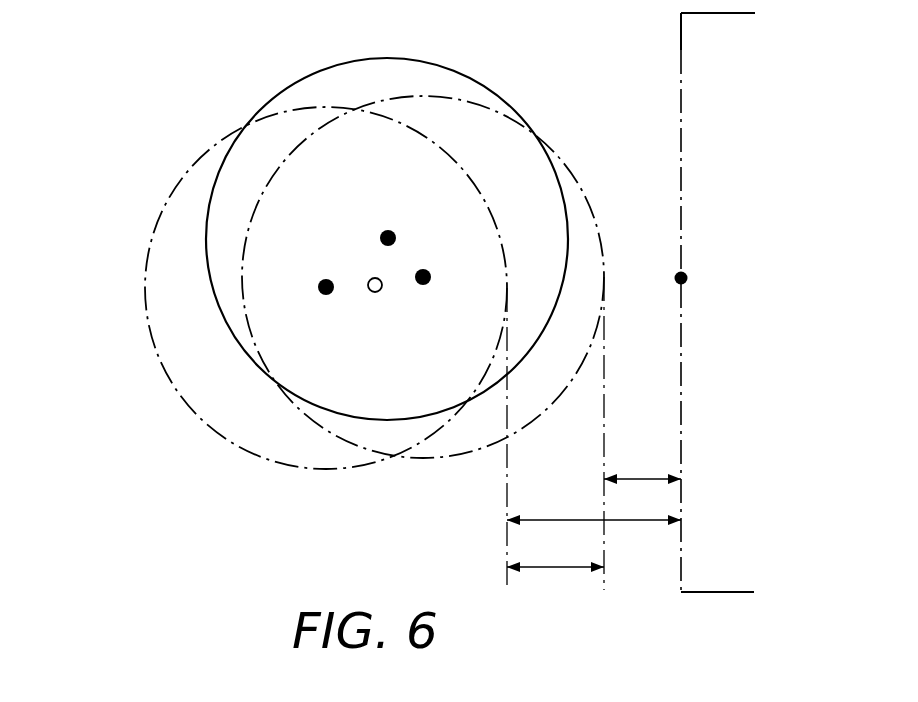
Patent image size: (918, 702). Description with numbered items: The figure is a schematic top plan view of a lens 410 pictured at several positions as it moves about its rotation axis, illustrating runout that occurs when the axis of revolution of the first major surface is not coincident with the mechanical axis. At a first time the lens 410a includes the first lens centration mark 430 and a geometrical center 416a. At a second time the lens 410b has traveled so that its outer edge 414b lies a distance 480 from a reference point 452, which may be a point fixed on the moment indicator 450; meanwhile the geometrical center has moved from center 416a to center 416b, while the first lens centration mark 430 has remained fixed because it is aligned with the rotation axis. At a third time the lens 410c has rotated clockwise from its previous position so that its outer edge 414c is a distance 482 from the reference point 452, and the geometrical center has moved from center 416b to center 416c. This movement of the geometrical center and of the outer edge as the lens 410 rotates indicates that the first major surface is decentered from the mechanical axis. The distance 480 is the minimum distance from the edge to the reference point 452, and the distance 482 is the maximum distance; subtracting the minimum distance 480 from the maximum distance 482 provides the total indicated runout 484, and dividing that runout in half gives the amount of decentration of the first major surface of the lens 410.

The lens 410 is at (212, 84).
The lens at time T1 410a is at (383, 58).
The lens at time T2 410b is at (563, 163).
The lens at time T3 410c is at (147, 325).
The outer edge of lens at time T2 414b is at (604, 253).
The outer edge of lens at time T3 414c is at (370, 466).
The geometrical center at time T1 416a is at (387, 231).
The geometrical center at time T2 416b is at (430, 283).
The geometrical center at time T3 416c is at (319, 285).
The first lens centration mark 430 is at (375, 293).
The moment indicator 450 is at (723, 594).
The reference point 452 is at (688, 277).
The minimum distance 480 is at (640, 477).
The maximum distance 482 is at (635, 522).
The total indicated runout (TIR) 484 is at (552, 569).